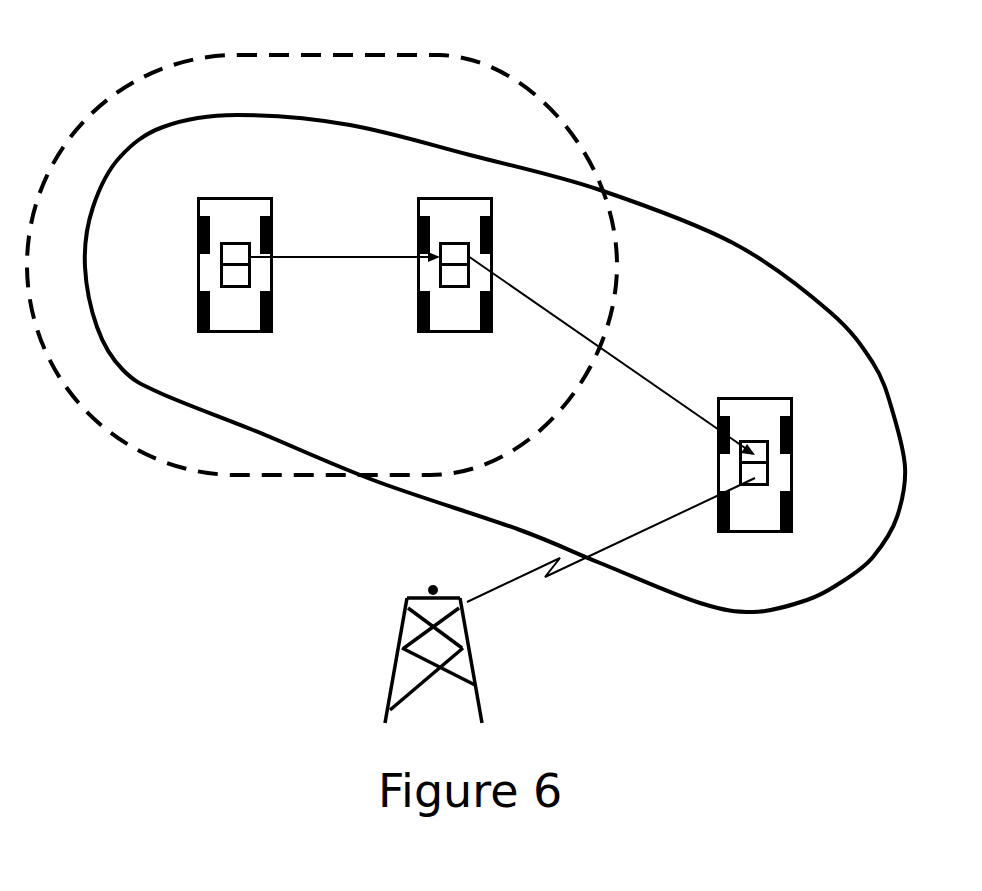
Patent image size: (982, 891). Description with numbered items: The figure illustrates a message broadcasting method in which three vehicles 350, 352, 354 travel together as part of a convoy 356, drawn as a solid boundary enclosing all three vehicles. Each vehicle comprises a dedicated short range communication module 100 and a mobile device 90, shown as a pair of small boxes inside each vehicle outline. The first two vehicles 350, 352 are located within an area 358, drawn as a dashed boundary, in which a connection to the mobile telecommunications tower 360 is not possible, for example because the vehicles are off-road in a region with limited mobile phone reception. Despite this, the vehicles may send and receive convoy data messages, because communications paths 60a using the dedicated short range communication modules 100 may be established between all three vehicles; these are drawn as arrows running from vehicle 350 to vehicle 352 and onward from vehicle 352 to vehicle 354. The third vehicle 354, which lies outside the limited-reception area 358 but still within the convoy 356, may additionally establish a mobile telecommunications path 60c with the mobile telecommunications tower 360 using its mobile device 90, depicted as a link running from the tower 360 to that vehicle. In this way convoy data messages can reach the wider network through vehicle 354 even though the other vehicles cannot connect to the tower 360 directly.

The area 358 is at (158, 68).
The convoy 356 is at (740, 247).
The vehicle 350 is at (252, 198).
The vehicle 352 is at (427, 198).
The vehicle 354 is at (753, 397).
The dedicated short range communication module 100 is at (232, 257).
The mobile device 90 is at (232, 275).
The communications path 60a is at (502, 343).
The mobile telecommunications path 60c is at (611, 540).
The mobile telecommunications tower 360 is at (477, 685).